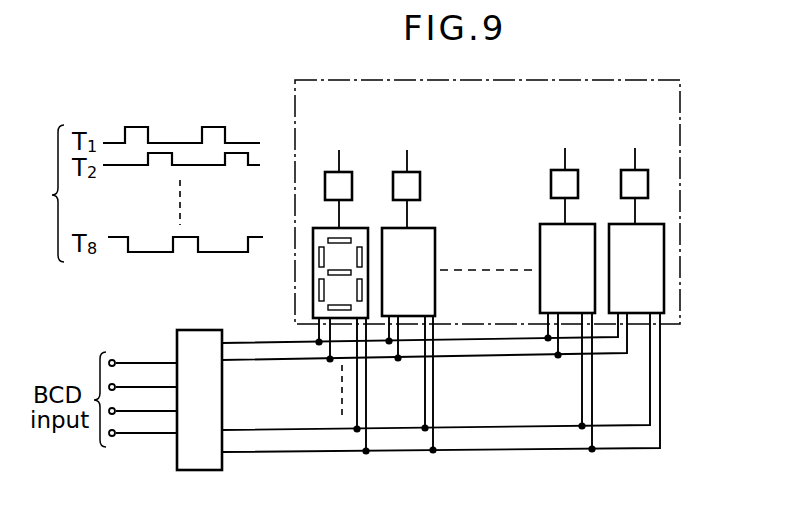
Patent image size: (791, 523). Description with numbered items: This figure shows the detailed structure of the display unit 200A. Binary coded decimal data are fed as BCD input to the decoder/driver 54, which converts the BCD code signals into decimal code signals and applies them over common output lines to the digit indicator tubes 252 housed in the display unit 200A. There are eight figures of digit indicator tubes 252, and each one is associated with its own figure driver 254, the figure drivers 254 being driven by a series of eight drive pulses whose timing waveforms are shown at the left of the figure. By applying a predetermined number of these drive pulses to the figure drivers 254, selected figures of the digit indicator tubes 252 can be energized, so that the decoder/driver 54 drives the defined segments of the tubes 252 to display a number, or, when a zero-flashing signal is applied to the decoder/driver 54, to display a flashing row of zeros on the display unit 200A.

The decoder/driver 54 is at (218, 470).
The display unit 200A is at (682, 170).
The digit indicator tubes 252 is at (368, 240).
The figure drivers 254 is at (368, 171).